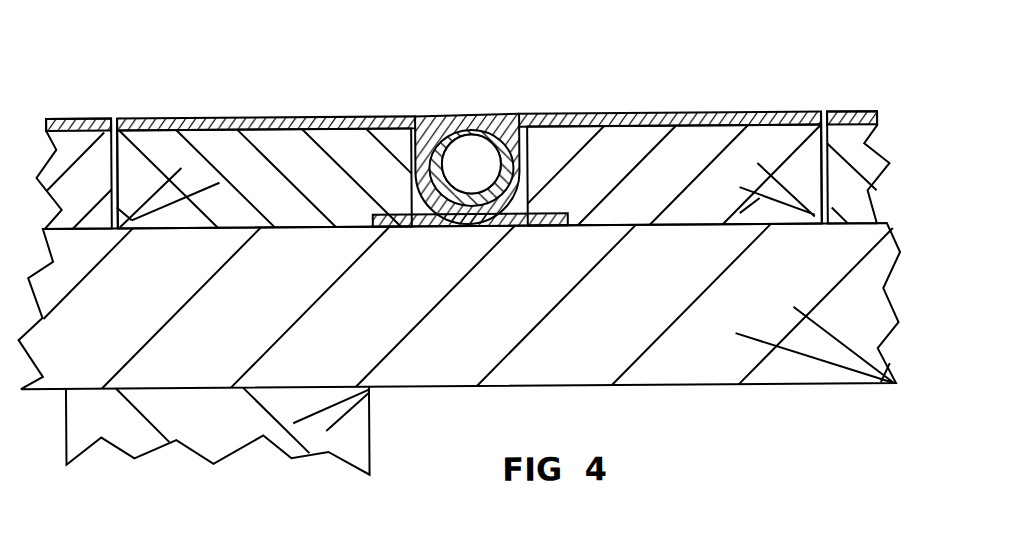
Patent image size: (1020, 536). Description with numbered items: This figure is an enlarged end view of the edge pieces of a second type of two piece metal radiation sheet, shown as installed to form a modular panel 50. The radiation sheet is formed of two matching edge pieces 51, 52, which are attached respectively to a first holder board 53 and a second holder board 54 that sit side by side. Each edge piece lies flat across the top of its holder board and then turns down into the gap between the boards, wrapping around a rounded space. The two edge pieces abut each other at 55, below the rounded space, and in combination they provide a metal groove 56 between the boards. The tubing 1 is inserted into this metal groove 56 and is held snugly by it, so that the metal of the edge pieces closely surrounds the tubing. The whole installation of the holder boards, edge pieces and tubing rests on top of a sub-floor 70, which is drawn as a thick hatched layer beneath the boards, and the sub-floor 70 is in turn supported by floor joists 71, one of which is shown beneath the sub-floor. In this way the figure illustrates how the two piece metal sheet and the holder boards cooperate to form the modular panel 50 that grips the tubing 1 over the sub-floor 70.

The tubing 1 is at (453, 118).
The modular panel 50 is at (469, 164).
The first edge piece 51 is at (394, 92).
The second edge piece 52 is at (538, 89).
The first holder board 53 is at (303, 232).
The second holder board 54 is at (618, 228).
The abutment of edge pieces 55 is at (457, 237).
The metal groove 56 is at (482, 88).
The sub-floor 70 is at (459, 334).
The floor joists 71 is at (368, 443).